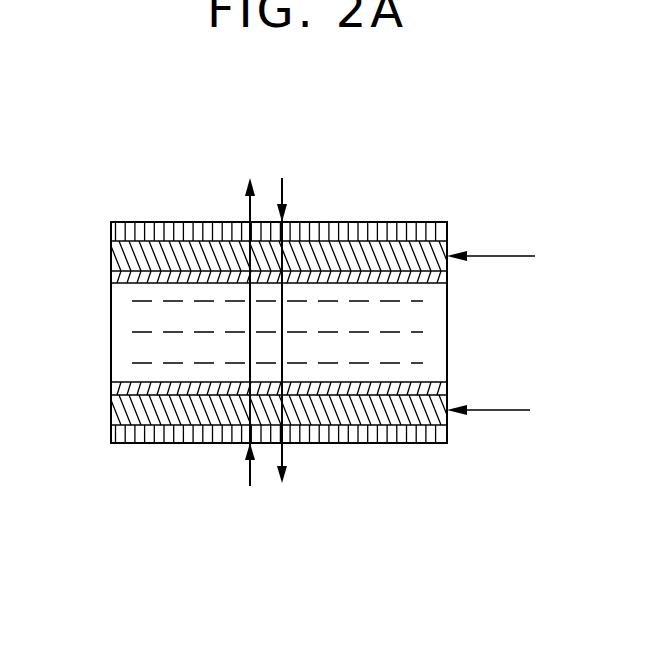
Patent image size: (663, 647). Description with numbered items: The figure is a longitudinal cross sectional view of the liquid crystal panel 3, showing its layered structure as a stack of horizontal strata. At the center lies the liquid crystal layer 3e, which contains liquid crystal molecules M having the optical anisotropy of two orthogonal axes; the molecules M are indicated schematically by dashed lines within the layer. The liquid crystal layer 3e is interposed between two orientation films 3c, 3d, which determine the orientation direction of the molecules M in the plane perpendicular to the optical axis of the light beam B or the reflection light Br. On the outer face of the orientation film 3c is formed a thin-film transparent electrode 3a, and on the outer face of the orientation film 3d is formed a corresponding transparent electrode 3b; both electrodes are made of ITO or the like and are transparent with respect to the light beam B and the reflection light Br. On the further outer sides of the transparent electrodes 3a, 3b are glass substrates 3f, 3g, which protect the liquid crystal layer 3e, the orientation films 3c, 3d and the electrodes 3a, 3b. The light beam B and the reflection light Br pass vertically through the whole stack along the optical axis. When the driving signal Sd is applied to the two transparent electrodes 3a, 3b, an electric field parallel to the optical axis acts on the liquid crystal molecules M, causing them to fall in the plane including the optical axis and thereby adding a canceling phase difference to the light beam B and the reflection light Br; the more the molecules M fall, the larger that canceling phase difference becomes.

The liquid crystal panel 3 is at (274, 288).
The glass substrate 3f is at (399, 238).
The transparent electrode 3a is at (413, 253).
The orientation film 3c is at (446, 279).
The liquid crystal layer 3e is at (441, 330).
The orientation film 3d is at (446, 391).
The transparent electrode 3b is at (112, 408).
The glass substrate 3g is at (400, 437).
The liquid crystal molecules M is at (140, 332).
The light beam B is at (248, 215).
The reflection light Br is at (285, 197).
The driving signal Sd is at (483, 256).